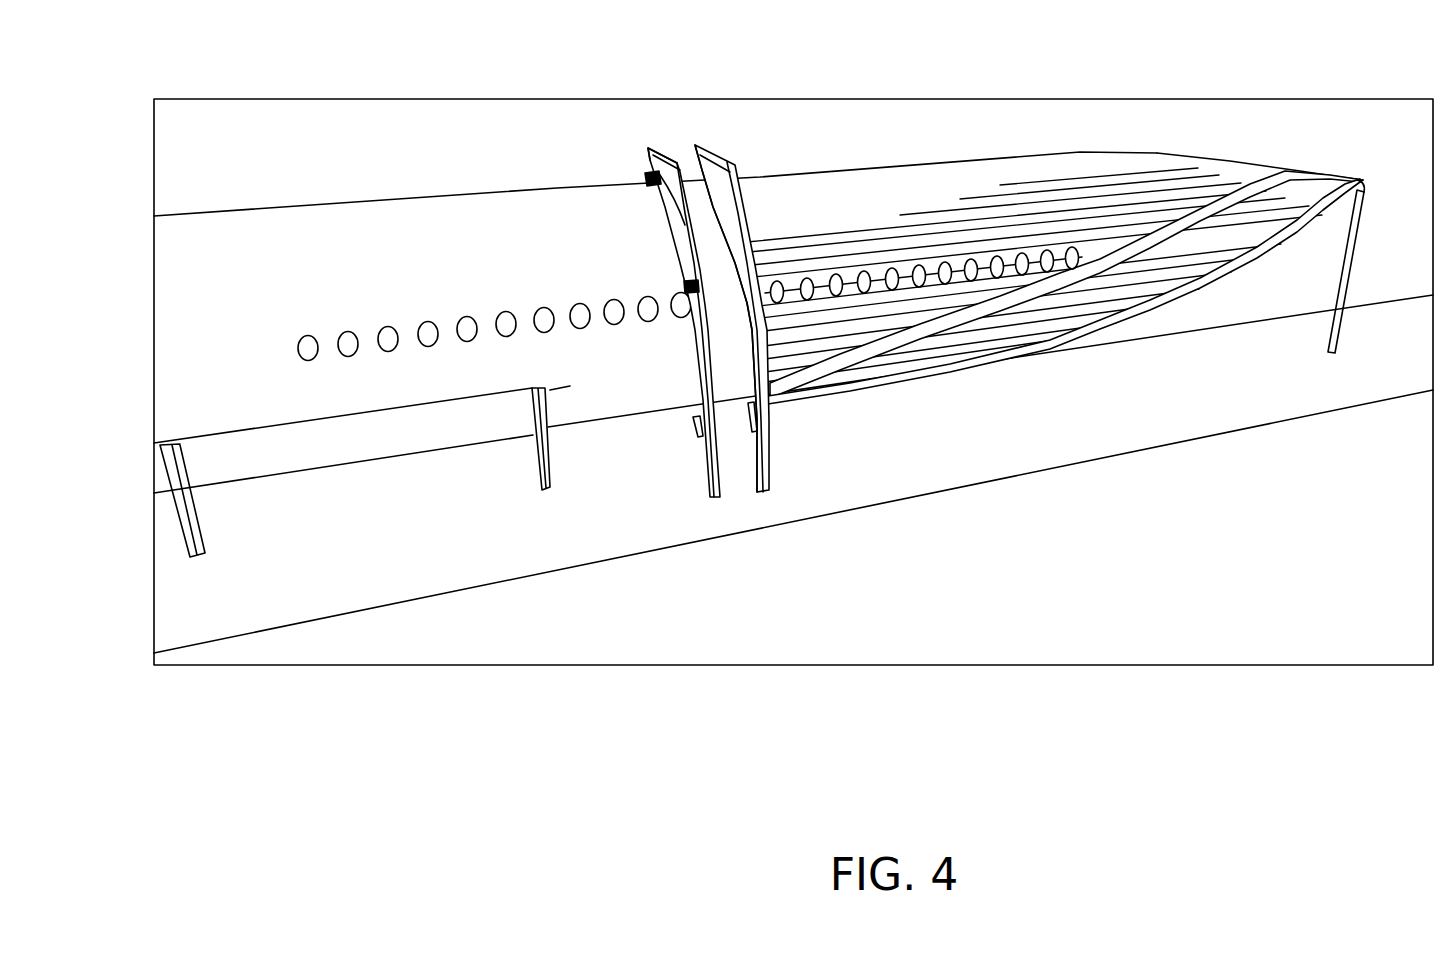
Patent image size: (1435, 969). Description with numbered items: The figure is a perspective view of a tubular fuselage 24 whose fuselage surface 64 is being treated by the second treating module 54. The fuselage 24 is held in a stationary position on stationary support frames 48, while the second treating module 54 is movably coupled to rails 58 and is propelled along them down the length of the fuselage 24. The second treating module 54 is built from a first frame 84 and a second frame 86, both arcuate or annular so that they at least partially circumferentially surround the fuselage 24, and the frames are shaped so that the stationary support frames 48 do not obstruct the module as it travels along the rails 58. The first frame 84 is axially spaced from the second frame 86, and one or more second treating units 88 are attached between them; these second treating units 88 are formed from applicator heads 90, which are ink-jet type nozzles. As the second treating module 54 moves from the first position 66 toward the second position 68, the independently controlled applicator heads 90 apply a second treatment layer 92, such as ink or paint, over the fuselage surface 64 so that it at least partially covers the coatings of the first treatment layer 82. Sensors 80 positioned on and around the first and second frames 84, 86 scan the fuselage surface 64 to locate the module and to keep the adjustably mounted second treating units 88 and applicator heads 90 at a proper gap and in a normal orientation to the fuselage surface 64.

The fuselage 24 is at (173, 411).
The stationary support frames 48 is at (192, 558).
The second treating module 54 is at (721, 360).
The rails 58 is at (307, 472).
The fuselage surface 64 is at (266, 210).
The first position 66 is at (1363, 180).
The second position 68 is at (233, 351).
The sensors 80 is at (648, 172).
The first treatment layer 82 is at (380, 217).
The first frame 84 is at (680, 200).
The second frame 86 is at (760, 350).
The second treating units 88 is at (733, 345).
The applicator heads 90 is at (677, 186).
The second treatment layer 92 is at (836, 255).